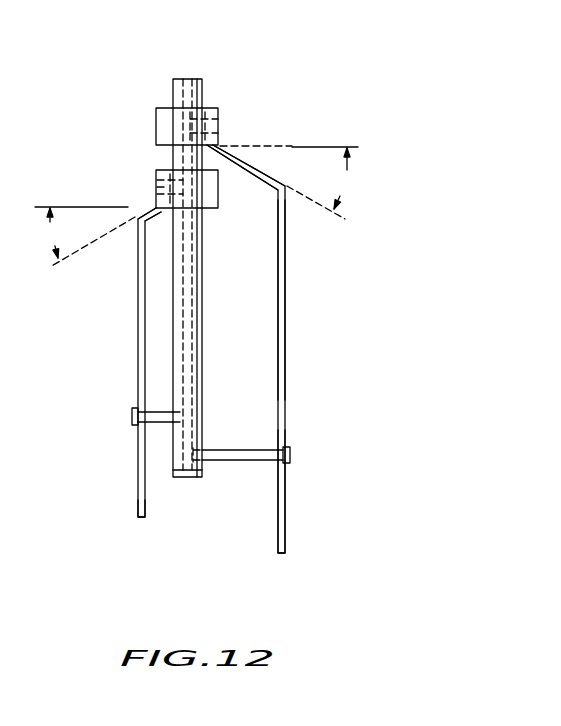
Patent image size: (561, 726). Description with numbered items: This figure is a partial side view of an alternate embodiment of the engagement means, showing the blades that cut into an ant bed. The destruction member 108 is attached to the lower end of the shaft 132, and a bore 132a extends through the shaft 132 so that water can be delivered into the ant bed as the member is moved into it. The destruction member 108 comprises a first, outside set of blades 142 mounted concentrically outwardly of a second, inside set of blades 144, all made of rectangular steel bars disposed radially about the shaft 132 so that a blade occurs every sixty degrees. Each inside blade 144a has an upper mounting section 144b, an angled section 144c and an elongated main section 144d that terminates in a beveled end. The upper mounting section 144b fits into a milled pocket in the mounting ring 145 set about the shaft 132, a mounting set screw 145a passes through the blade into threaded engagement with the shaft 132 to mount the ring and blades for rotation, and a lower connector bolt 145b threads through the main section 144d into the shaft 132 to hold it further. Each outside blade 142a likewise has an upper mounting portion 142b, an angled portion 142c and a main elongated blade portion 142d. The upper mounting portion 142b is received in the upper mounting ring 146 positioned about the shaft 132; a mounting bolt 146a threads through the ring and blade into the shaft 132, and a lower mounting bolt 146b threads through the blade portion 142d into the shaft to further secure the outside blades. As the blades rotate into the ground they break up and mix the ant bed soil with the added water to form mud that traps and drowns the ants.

The destruction member 108 is at (350, 118).
The shaft 132 is at (202, 88).
The bore 132a is at (177, 458).
The first set of blades 142 is at (285, 287).
The outside blade 142a is at (285, 408).
The upper mounting portion 142b is at (218, 110).
The angled portion 142c is at (248, 172).
The main elongated blade portion 142d is at (278, 302).
The second set of blades 144 is at (138, 350).
The inside blade 144a is at (137, 396).
The upper mounting section 144b is at (160, 188).
The angled section 144c is at (155, 215).
The elongated main section 144d is at (138, 500).
The mounting ring 145 is at (212, 203).
The mounting set screw 145a is at (165, 185).
The lower connector bolt 145b is at (162, 420).
The upper mounting ring 146 is at (160, 115).
The mounting bolt 146a is at (218, 126).
The lower mounting bolt 146b is at (238, 457).